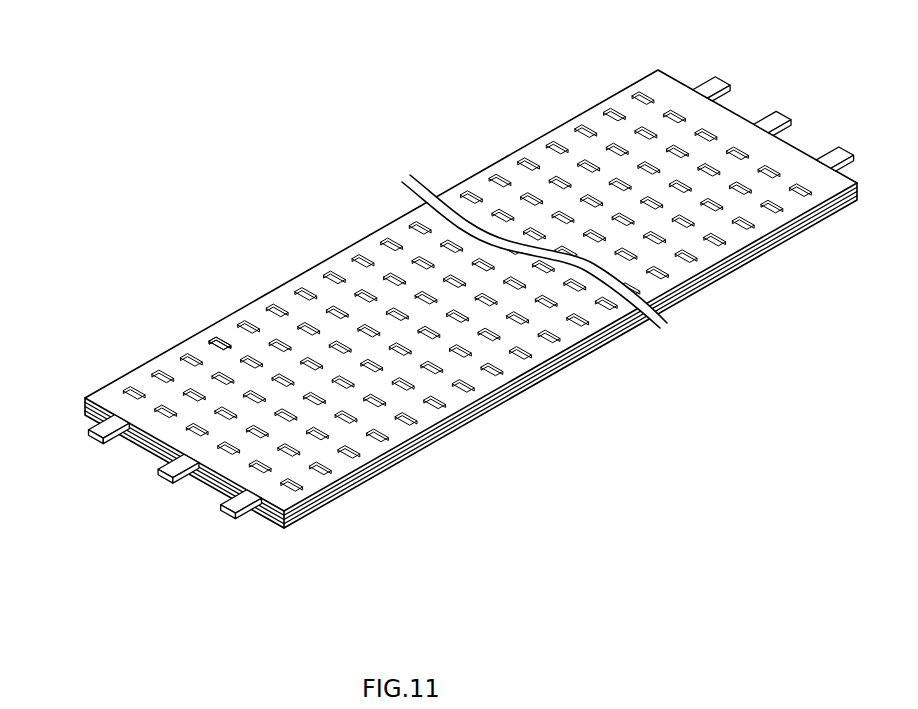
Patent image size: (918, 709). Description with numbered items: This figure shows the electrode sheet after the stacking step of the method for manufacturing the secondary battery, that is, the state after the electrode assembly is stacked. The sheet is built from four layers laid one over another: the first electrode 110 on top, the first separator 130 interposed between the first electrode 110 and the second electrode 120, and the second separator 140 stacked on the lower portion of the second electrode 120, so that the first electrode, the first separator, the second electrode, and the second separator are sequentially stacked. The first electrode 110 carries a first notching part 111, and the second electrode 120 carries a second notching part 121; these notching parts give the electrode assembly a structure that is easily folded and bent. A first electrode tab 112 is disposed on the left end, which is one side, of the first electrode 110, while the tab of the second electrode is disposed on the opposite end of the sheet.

The first electrode 110 is at (343, 485).
The first notching part 111 is at (218, 338).
The first electrode tab 112 is at (90, 433).
The second electrode 120 is at (435, 435).
The second notching part 121 is at (715, 80).
The first separator 130 is at (392, 456).
The second separator 140 is at (477, 413).